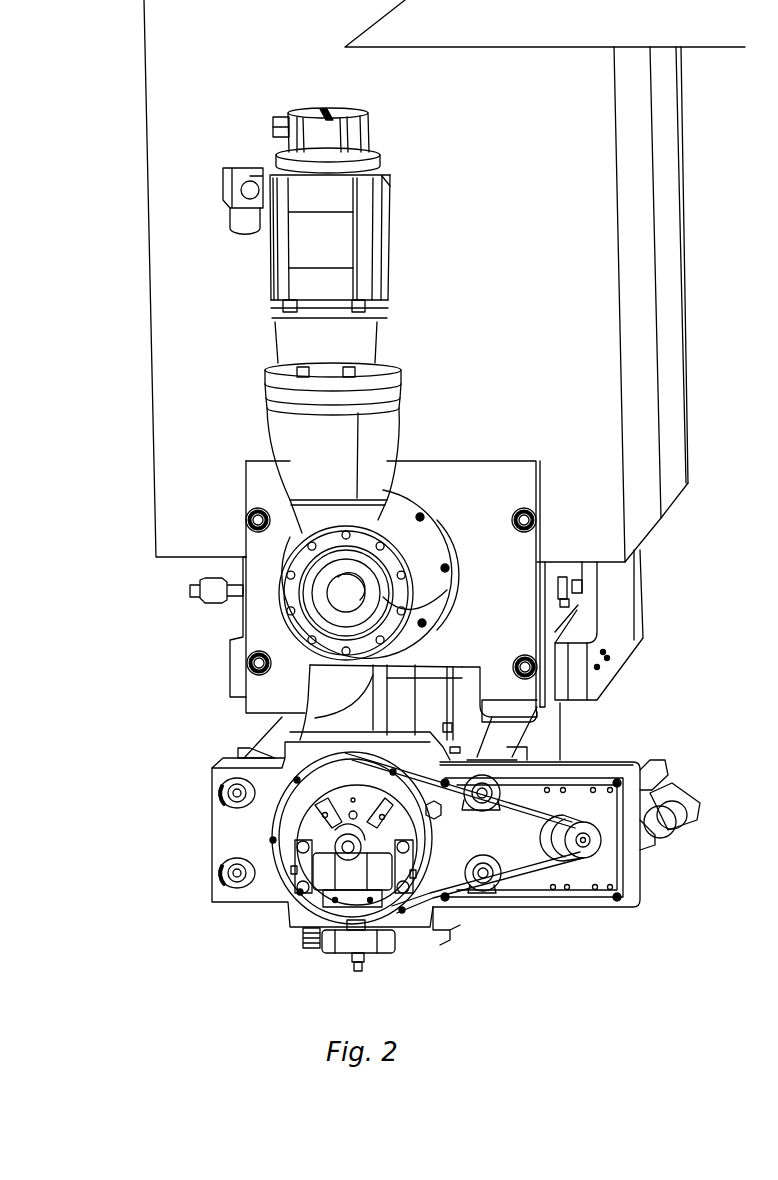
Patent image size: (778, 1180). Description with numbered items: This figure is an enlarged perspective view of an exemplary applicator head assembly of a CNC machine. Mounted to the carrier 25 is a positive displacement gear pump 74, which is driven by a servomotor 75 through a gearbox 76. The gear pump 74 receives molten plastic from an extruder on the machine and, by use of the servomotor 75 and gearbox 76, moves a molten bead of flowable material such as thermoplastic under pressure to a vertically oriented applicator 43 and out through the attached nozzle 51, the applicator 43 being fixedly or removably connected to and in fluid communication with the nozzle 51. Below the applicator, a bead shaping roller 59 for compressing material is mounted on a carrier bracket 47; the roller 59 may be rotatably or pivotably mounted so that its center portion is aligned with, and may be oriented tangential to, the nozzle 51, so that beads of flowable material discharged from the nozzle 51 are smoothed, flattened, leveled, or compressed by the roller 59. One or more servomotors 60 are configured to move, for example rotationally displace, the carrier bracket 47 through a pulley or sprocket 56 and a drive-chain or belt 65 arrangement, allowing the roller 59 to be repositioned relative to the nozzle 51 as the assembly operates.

The carrier 25 is at (118, 362).
The servomotor 75 is at (318, 112).
The positive displacement gear pump 74 is at (303, 715).
The gearbox 76 is at (443, 573).
The vertically oriented applicator 43 is at (185, 829).
The carrier bracket 47 is at (290, 812).
The nozzle 51 is at (340, 835).
The bead shaping roller 59 is at (397, 910).
The drive-chain or belt 65 is at (453, 800).
The pulley or sprocket 56 is at (587, 855).
The servomotor 60 is at (650, 762).